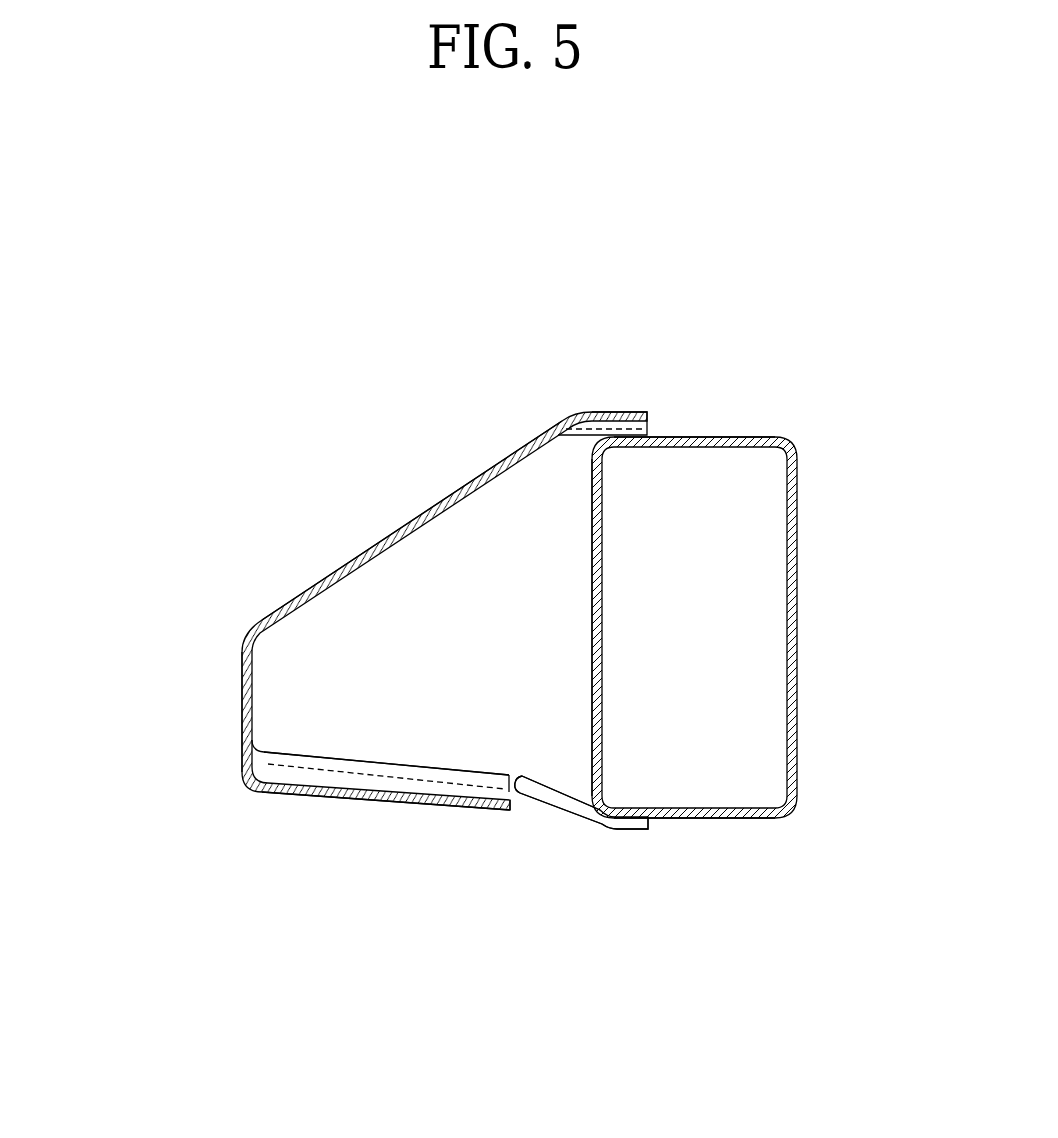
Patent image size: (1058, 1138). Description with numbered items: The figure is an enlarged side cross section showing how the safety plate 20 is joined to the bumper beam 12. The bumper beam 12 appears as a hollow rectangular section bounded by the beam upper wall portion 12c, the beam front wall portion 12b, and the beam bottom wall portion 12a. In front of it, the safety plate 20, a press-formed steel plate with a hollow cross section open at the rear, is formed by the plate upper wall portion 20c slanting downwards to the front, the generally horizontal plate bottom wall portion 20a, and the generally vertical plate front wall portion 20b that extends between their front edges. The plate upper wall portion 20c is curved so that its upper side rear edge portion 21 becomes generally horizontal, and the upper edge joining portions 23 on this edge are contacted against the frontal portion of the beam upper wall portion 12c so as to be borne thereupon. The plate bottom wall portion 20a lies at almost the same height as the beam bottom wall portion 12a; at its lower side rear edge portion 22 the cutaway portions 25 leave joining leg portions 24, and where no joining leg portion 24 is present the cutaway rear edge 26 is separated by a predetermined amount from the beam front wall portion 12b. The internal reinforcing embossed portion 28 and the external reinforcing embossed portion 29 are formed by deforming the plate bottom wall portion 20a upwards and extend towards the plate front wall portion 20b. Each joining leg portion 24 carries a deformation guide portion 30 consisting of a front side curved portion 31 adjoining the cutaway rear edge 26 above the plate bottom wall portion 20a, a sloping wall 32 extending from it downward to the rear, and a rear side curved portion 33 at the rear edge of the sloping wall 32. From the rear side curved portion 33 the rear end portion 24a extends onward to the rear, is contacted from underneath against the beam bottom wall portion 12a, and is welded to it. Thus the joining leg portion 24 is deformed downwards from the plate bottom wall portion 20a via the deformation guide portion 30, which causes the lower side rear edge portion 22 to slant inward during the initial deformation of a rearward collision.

The bumper beam 12 is at (806, 422).
The beam bottom wall portion 12a is at (735, 820).
The beam front wall portion 12b is at (591, 557).
The beam upper wall portion 12c is at (723, 436).
The safety plate 20 is at (460, 458).
The plate bottom wall portion 20a is at (360, 801).
The plate front wall portion 20b is at (241, 700).
The plate upper wall portion 20c is at (347, 562).
The upper side rear edge portion 21 is at (570, 411).
The lower side rear edge portion 22 is at (557, 773).
The upper edge joining portion 23 is at (620, 427).
The joining leg portion 24 is at (724, 1013).
The rear end portion 24a is at (634, 830).
The cutaway portion 25 is at (512, 809).
The cutaway rear edge 26 is at (512, 809).
The internal reinforcing embossed portion 28 is at (385, 763).
The external reinforcing embossed portion 29 is at (385, 763).
The deformation guide portion 30 is at (622, 963).
The front side curved portion 31 is at (523, 800).
The sloping wall 32 is at (560, 813).
The rear side curved portion 33 is at (592, 826).